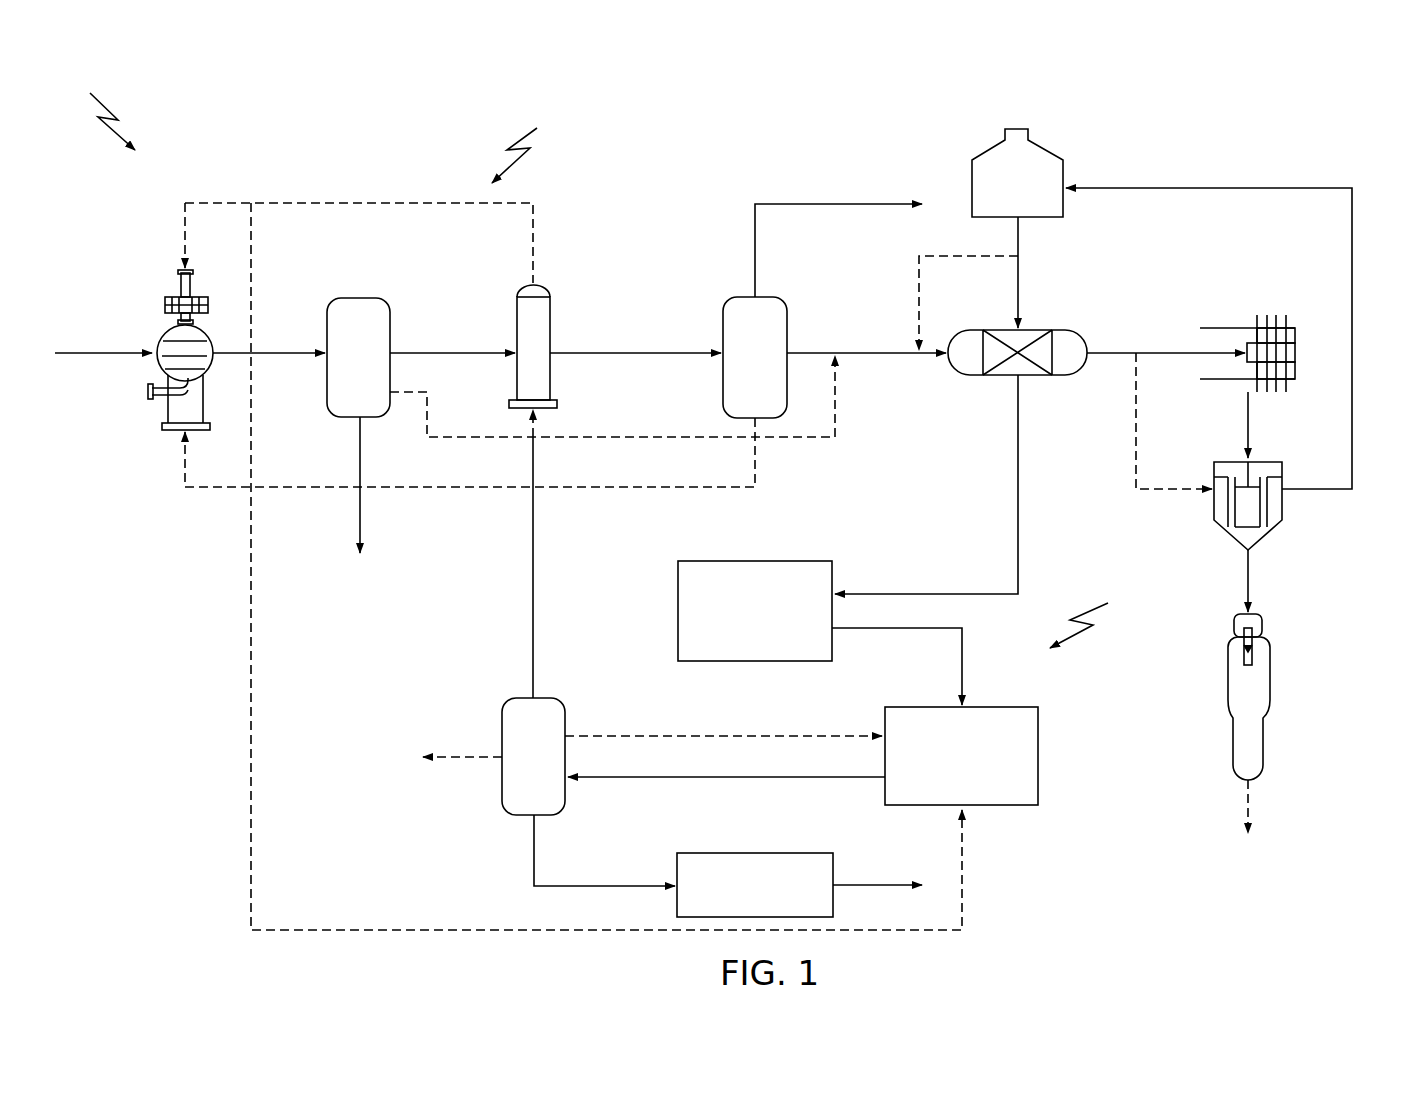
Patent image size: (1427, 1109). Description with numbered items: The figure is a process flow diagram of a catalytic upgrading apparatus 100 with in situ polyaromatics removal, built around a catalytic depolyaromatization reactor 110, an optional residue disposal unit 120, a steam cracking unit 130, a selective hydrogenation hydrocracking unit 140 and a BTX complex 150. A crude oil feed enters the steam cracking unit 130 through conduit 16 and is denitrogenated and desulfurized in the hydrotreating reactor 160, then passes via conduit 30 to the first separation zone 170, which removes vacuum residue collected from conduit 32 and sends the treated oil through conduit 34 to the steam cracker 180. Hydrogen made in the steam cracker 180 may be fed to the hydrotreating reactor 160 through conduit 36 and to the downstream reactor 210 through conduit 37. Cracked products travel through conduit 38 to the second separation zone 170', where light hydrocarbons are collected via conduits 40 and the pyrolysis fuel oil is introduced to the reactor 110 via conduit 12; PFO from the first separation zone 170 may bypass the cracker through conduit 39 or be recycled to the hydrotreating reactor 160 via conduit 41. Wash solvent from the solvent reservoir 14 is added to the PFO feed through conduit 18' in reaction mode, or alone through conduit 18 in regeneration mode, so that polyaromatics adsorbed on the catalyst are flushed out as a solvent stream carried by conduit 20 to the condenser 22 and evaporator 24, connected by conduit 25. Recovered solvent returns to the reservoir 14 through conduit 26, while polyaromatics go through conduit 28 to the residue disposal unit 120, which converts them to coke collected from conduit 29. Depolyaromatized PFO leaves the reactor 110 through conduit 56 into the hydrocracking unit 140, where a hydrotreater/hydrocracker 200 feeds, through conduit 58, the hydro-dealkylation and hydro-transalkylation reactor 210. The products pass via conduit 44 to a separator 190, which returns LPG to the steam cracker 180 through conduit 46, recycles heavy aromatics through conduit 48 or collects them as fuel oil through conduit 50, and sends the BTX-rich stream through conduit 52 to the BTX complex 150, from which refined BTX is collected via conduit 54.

The apparatus 100 is at (95, 107).
The steam cracking unit 130 is at (534, 140).
The selective hydrogenation hydrocracking unit 140 is at (1103, 614).
The conduit 16 is at (108, 352).
The hydrotreating reactor 160 is at (180, 285).
The conduit 30 is at (283, 355).
The first separation zone 170 is at (364, 331).
The conduit 32 is at (360, 443).
The conduit 36 is at (360, 203).
The conduit 37 is at (251, 730).
The conduit 39 is at (837, 405).
The conduit 41 is at (185, 470).
The conduit 34 is at (468, 356).
The steam cracker 180 is at (550, 330).
The conduit 38 is at (640, 356).
The second separation zone 170' is at (793, 357).
The conduits 40 is at (838, 204).
The conduit 12 is at (897, 352).
The conduit 18' is at (936, 298).
The solvent reservoir 14 is at (1045, 147).
The conduit 18 is at (1048, 272).
The catalytic depolyaromatization reactor 110 is at (1062, 330).
The conduit 20 is at (1157, 352).
The condenser 22 is at (1228, 327).
The conduit 25 is at (1248, 415).
The evaporator 24 is at (1230, 462).
The conduit 26 is at (1352, 368).
The conduit 28 is at (1248, 563).
The residue disposal unit 120 is at (1228, 698).
The conduit 29 is at (1246, 798).
The conduit 56 is at (1018, 434).
The hydrotreater/hydrocracker 200 is at (795, 561).
The conduit 58 is at (962, 668).
The hydro-dealkylation and hydro-transalkylation reactor 210 is at (1000, 806).
The conduit 46 is at (533, 506).
The separator 190 is at (565, 720).
The conduit 48 is at (706, 735).
The conduit 50 is at (462, 758).
The conduit 44 is at (707, 778).
The conduit 52 is at (534, 850).
The BTX complex 150 is at (755, 853).
The conduit 54 is at (876, 885).